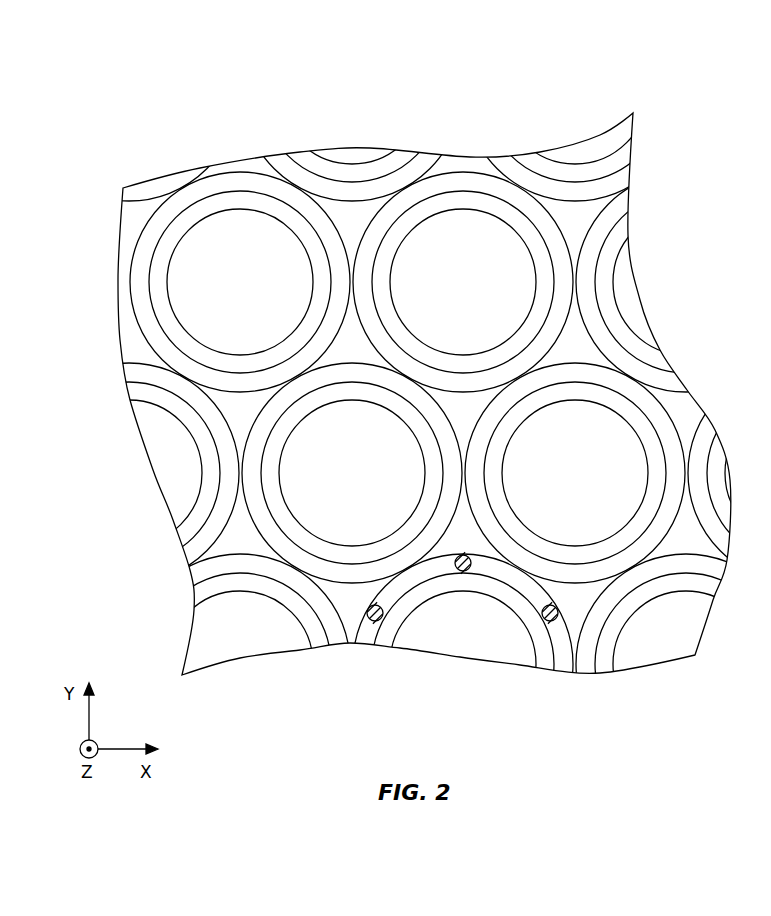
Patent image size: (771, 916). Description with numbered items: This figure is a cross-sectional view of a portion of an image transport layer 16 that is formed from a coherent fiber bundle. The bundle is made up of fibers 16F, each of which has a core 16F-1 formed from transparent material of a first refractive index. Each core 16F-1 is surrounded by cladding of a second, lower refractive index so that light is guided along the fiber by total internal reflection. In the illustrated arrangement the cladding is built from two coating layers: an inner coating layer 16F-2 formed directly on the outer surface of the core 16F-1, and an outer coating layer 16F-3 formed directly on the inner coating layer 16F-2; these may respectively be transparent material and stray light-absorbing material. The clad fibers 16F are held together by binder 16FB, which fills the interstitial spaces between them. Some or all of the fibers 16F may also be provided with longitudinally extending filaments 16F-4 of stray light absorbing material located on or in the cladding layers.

The image transport layer 16 is at (452, 90).
The fibers 16F is at (138, 340).
The core 16F-1 is at (265, 232).
The inner coating layer 16F-2 is at (238, 200).
The outer coating layer 16F-3 is at (182, 202).
The longitudinally extending filaments 16F-4 is at (543, 618).
The binder 16FB is at (243, 410).